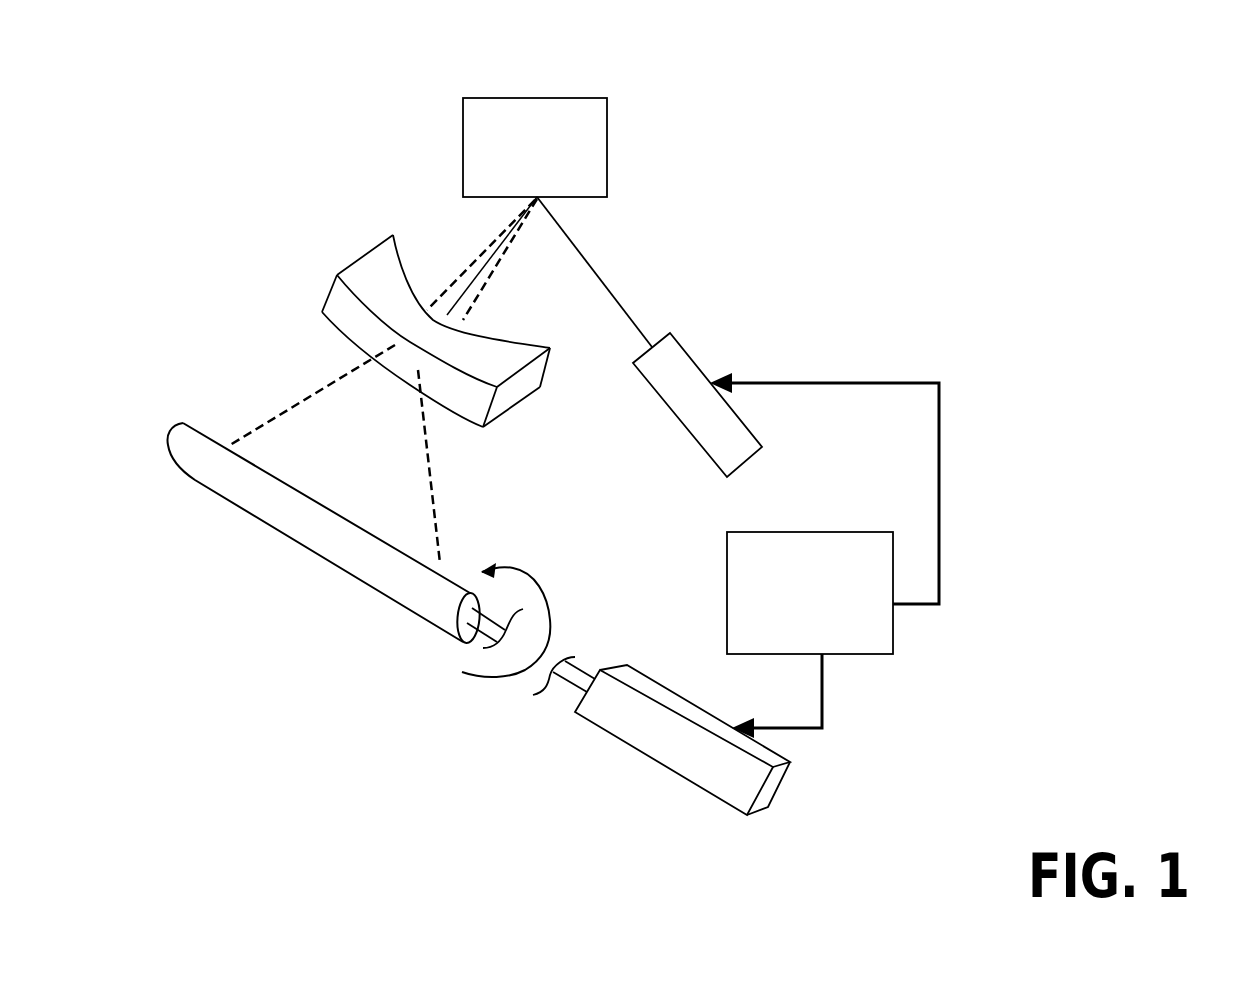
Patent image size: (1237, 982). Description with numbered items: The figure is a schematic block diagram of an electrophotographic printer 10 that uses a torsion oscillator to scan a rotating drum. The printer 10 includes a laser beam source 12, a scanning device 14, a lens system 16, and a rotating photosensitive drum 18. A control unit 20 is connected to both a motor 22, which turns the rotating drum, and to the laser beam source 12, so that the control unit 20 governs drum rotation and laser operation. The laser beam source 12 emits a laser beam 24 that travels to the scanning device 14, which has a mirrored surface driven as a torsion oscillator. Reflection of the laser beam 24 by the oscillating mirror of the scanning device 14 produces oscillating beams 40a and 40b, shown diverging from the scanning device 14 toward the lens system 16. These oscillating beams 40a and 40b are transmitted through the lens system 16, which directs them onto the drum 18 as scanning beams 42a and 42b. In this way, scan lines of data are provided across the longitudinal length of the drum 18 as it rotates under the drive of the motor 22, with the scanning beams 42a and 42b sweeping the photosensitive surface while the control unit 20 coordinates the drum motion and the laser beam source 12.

The electrophotographic printer 10 is at (758, 145).
The laser beam source 12 is at (680, 375).
The scanning device 14 is at (554, 145).
The lens system 16 is at (390, 297).
The rotating photosensitive drum 18 is at (280, 533).
The control unit 20 is at (830, 578).
The motor 22 is at (657, 762).
The laser beam 24 is at (587, 260).
The oscillating beam 40a is at (482, 298).
The oscillating beam 40b is at (455, 280).
The scanning beam 42a is at (430, 482).
The scanning beam 42b is at (280, 413).